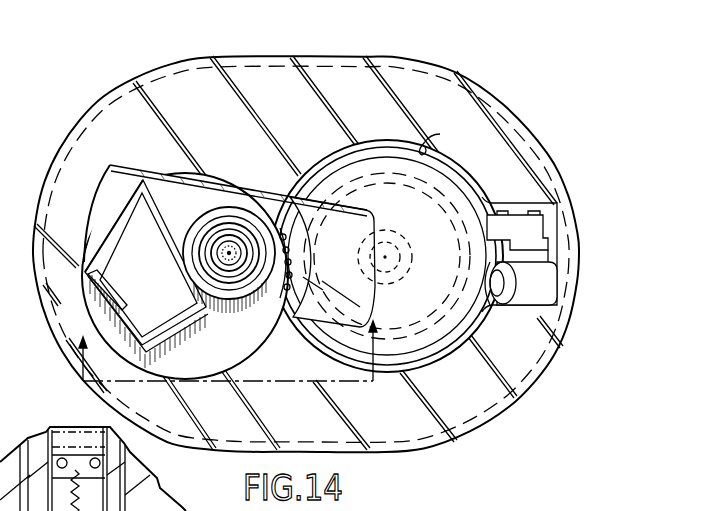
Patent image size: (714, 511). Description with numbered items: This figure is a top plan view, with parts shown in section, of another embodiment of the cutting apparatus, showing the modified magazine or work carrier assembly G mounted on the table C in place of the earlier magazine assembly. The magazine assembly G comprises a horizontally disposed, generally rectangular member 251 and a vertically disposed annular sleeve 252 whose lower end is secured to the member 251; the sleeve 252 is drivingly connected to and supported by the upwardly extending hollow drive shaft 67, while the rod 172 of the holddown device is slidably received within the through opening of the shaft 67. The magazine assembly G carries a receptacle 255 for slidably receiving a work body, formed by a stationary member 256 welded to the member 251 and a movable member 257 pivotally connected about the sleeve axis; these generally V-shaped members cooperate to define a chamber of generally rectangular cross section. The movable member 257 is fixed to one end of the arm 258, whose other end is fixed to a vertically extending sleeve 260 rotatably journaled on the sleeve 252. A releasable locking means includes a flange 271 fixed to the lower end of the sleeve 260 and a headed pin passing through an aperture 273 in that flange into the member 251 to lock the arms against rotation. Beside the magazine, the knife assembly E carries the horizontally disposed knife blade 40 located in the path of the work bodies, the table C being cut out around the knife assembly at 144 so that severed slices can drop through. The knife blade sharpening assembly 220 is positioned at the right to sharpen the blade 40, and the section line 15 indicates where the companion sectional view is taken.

The table C is at (187, 84).
The horizontally disposed member 251 is at (148, 178).
The magazine assembly G is at (182, 150).
The stationary member 256 is at (118, 195).
The receptacle 255 is at (103, 216).
The movable member 257 is at (123, 305).
The vertically extending sleeve 260 is at (215, 217).
The annular sleeve 252 is at (231, 247).
The rod 172 is at (292, 197).
The flange 271 is at (287, 237).
The aperture 273 is at (292, 262).
The hollow drive shaft 67 is at (283, 296).
The arm 258 is at (252, 349).
The section line 15 is at (231, 346).
The cut out 144 is at (444, 138).
The knife blade 40 is at (387, 251).
The knife assembly E is at (447, 204).
The knife blade sharpening assembly 220 is at (553, 290).